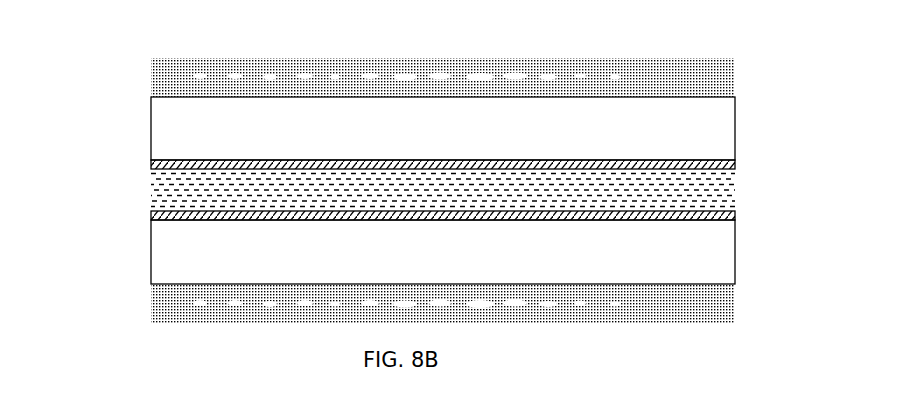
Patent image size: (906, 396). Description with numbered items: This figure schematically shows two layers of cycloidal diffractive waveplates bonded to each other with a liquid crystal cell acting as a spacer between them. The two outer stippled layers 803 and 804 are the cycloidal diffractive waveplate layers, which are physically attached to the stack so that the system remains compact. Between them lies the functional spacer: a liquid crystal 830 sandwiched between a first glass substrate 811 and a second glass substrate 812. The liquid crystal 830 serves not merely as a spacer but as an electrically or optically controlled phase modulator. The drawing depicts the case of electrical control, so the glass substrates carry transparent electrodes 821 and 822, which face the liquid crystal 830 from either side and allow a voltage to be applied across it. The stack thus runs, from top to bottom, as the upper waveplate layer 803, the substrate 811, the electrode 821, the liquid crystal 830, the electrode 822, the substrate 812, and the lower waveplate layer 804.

The upper adhesive/protective layer 803 is at (167, 72).
The glass substrate 811 is at (173, 130).
The transparent electrode 821 is at (151, 163).
The liquid crystal 830 is at (712, 191).
The transparent electrode 822 is at (151, 216).
The glass substrate 812 is at (183, 255).
The lower adhesive/protective layer 804 is at (168, 317).